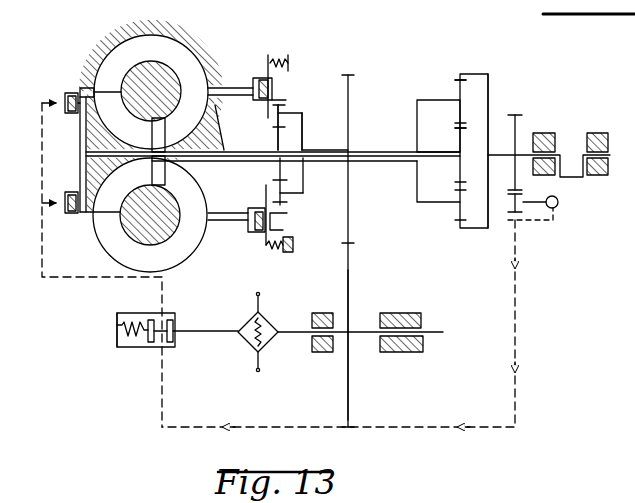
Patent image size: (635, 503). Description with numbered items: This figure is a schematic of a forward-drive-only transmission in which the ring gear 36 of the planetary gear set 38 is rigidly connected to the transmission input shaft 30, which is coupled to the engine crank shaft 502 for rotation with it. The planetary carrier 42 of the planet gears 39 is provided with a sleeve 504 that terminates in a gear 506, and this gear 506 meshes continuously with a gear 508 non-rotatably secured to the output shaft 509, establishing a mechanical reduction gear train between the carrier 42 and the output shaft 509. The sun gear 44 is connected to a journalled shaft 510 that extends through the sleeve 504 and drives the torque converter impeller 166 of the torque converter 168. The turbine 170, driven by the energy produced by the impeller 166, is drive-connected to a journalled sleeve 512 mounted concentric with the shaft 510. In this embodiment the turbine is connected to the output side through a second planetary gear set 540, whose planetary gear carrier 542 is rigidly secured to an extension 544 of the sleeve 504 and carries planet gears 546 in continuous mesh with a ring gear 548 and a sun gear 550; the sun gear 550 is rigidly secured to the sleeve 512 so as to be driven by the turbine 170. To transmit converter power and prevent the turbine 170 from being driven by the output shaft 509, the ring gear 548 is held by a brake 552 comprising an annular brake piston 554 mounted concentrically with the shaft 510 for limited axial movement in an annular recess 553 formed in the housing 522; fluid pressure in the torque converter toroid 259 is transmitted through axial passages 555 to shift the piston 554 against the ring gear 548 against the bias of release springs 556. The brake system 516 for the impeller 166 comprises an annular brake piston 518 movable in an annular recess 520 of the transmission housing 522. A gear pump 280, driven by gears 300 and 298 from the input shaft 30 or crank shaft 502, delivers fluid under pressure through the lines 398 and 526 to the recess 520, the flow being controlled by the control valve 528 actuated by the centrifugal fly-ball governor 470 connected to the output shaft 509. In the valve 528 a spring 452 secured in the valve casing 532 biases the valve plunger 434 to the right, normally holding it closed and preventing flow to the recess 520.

The transmission input shaft 30 is at (570, 144).
The ring gear 36 is at (490, 86).
The planetary gear set 38 is at (476, 70).
The planet gears 39 is at (458, 84).
The planetary carrier 42 is at (418, 118).
The sun gear 44 is at (456, 139).
The torque converter impeller 166 is at (90, 90).
The torque converter 168 is at (211, 40).
The turbine 170 is at (166, 132).
The torque converter toroid 259 is at (164, 263).
The gear pump 280 is at (560, 205).
The gear 298 is at (520, 202).
The gear 300 is at (518, 118).
The line 398 is at (162, 407).
The valve plunger 434 is at (176, 328).
The spring 452 is at (119, 322).
The centrifugal fly-ball governor 470 is at (266, 352).
The engine crank shaft 502 is at (586, 182).
The sleeve 504 is at (380, 157).
The gear 506 is at (352, 133).
The gear 508 is at (350, 296).
The output shaft 509 is at (434, 338).
The shaft 510 is at (436, 157).
The sleeve 512 is at (221, 147).
The brake system 516 is at (130, 356).
The brake piston 518 is at (72, 192).
The annular recess 520 is at (70, 114).
The transmission housing 522 is at (79, 88).
The line 526 is at (46, 280).
The control valve 528 is at (170, 348).
The valve casing 532 is at (112, 342).
The planetary gear set 540 is at (307, 100).
The planetary gear carrier 542 is at (304, 128).
The extension 544 is at (320, 150).
The planet gears 546 is at (288, 200).
The ring gear 548 is at (292, 220).
The sun gear 550 is at (278, 138).
The brake 552 is at (258, 64).
The annular recess 553 is at (259, 208).
The brake piston 554 is at (265, 246).
The axial passages 555 is at (230, 87).
The release springs 556 is at (284, 58).